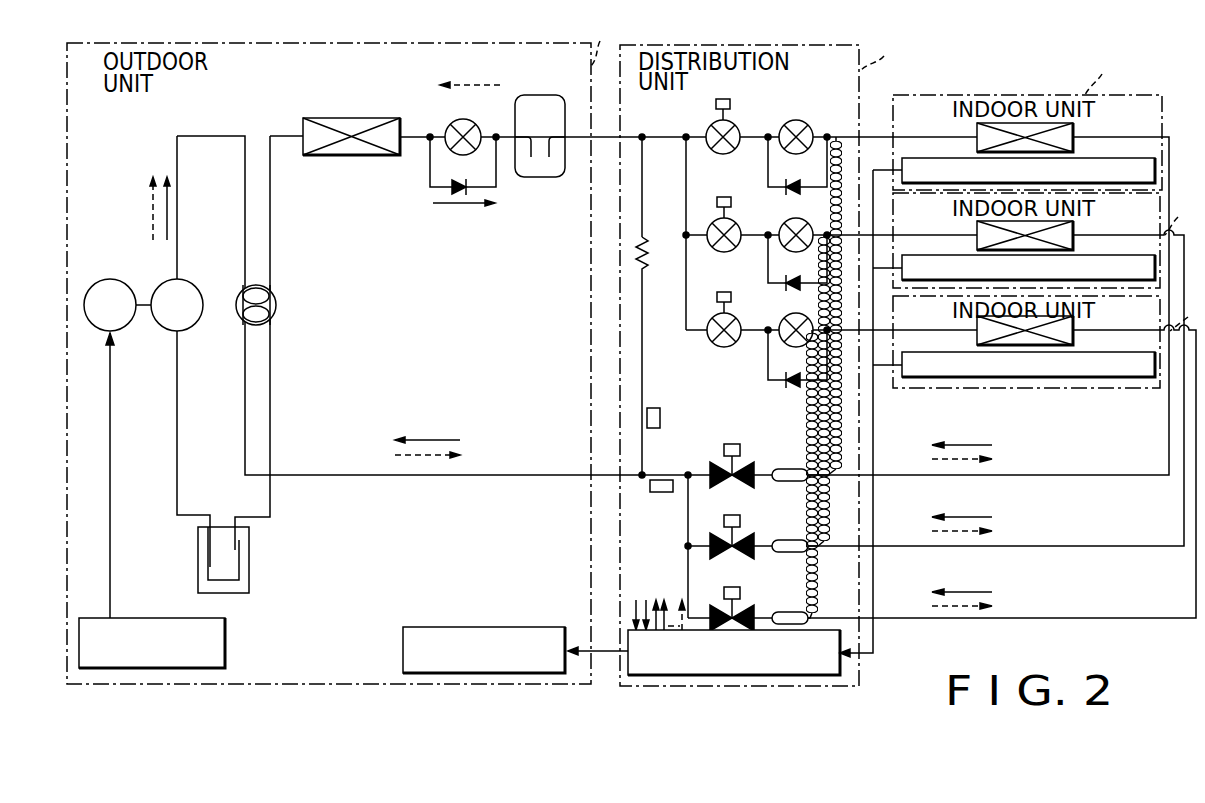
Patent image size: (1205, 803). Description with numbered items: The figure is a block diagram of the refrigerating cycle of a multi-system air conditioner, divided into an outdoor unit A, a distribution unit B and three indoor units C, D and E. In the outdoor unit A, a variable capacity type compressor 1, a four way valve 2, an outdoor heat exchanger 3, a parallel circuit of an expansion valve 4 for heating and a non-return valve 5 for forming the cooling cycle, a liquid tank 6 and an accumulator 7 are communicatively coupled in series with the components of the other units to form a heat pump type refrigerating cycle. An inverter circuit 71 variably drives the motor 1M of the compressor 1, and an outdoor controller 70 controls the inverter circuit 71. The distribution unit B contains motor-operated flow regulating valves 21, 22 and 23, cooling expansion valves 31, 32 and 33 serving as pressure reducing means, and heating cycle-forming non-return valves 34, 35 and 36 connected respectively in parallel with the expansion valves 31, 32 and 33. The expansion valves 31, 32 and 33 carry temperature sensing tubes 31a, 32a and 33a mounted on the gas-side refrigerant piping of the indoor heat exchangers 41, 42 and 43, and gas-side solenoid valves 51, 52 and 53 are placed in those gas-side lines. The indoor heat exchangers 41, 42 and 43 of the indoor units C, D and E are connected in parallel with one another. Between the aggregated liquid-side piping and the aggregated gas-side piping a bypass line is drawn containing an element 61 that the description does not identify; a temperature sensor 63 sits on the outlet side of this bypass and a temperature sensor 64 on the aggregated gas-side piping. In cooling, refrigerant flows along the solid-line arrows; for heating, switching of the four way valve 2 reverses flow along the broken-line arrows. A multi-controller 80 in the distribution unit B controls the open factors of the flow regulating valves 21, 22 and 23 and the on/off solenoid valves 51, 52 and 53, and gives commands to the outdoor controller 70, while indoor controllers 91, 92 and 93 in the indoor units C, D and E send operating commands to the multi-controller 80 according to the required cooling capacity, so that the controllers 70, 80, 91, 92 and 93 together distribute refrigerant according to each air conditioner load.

The variable capacity type compressor 1 is at (194, 285).
The motor 1M is at (124, 329).
The four way valve 2 is at (276, 300).
The outdoor heat exchanger 3 is at (352, 118).
The expansion valve for heating 4 is at (470, 124).
The non-return valve 5 is at (448, 188).
The liquid tank 6 is at (540, 177).
The accumulator 7 is at (249, 560).
The motor-operated flow regulating valve 21 is at (738, 125).
The motor-operated flow regulating valve 22 is at (738, 223).
The motor-operated flow regulating valve 23 is at (737, 320).
The expansion valve 31 is at (808, 127).
The expansion valve 32 is at (806, 223).
The expansion valve 33 is at (782, 345).
The non-return valve 34 is at (786, 186).
The non-return valve 35 is at (785, 281).
The non-return valve 36 is at (792, 385).
The temperature sensing tube 31a is at (780, 469).
The temperature sensing tube 32a is at (780, 540).
The temperature sensing tube 33a is at (780, 612).
The indoor heat exchanger 41 is at (1076, 133).
The indoor heat exchanger 42 is at (1076, 233).
The indoor heat exchanger 43 is at (1076, 328).
The gas-side valve 51 is at (718, 462).
The gas-side valve 52 is at (720, 534).
The gas-side valve 53 is at (720, 605).
The heater 61 is at (646, 240).
The temperature sensor 63 is at (654, 428).
The temperature sensor 64 is at (661, 492).
The outdoor controller 70 is at (476, 627).
The inverter circuit 71 is at (155, 618).
The multi-controller 80 is at (841, 670).
The indoor controller 91 is at (915, 158).
The indoor controller 92 is at (915, 255).
The indoor controller 93 is at (915, 352).
The outdoor unit A is at (601, 42).
The distribution unit B is at (880, 54).
The indoor unit C is at (1101, 74).
The indoor unit D is at (1180, 215).
The indoor unit E is at (1183, 313).